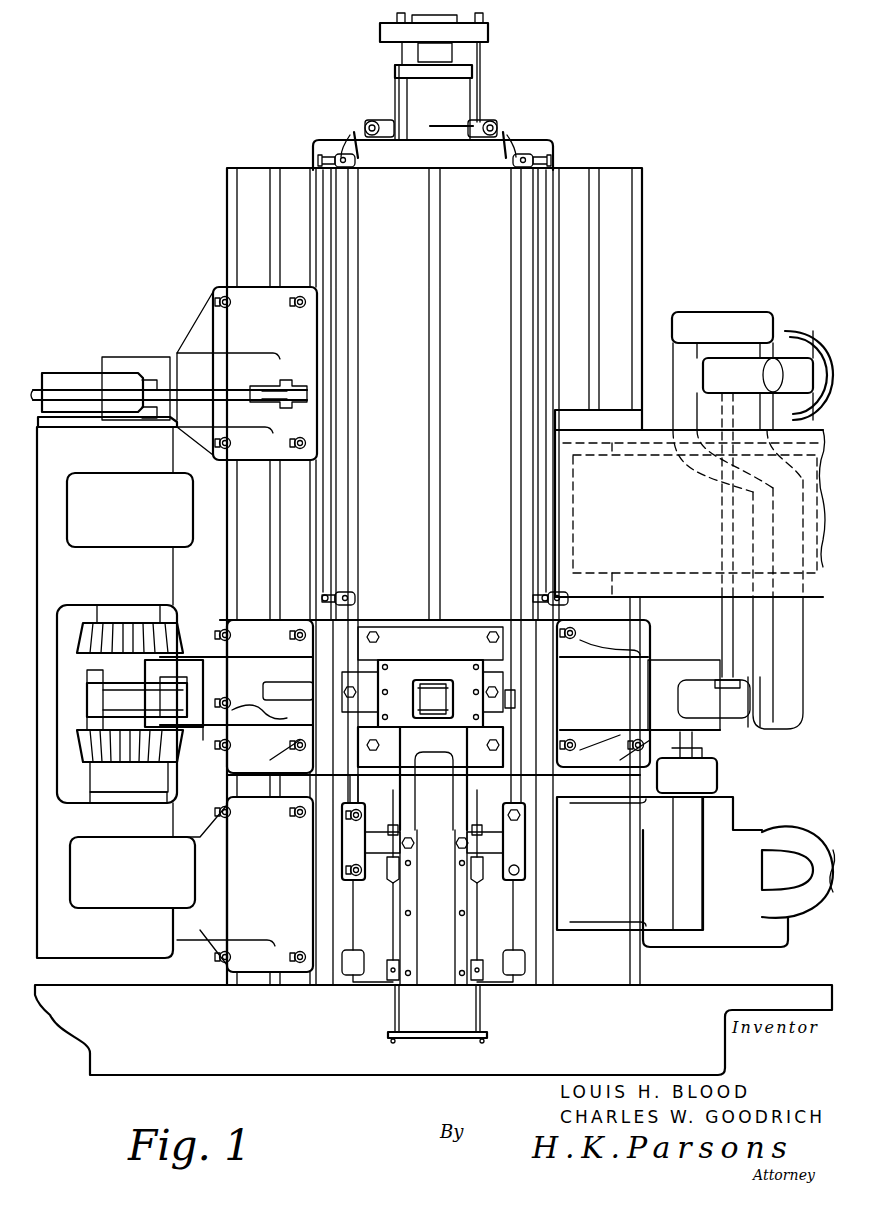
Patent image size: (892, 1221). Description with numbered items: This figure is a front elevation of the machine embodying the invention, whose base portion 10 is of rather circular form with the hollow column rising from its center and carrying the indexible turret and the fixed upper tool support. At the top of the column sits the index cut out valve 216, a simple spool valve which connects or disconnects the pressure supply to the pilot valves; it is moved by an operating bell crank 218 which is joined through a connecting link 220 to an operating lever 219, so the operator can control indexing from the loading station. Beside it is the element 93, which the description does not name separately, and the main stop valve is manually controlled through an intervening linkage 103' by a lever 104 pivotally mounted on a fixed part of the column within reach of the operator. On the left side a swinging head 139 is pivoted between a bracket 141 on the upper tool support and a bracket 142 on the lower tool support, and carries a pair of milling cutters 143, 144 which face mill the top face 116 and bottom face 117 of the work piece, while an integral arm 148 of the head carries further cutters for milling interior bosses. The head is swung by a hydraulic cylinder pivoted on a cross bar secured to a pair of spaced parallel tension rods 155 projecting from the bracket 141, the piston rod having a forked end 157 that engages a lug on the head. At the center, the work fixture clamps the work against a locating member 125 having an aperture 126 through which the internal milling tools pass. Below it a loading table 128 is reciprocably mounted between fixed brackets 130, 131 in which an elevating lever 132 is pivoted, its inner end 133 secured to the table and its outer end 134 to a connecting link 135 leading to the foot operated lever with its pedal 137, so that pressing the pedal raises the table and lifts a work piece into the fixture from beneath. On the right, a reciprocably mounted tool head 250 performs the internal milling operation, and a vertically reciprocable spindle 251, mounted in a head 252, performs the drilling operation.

The base portion 10 is at (386, 1076).
The roller 93 is at (489, 127).
The intervening linkage 103' is at (562, 149).
The lever 104 is at (569, 598).
The top face 116 is at (200, 660).
The bottom face 117 is at (193, 732).
The locating member 125 is at (395, 665).
The aperture 126 is at (433, 690).
The loading table 128 is at (462, 748).
The fixed bracket 130 is at (364, 882).
The fixed bracket 131 is at (506, 870).
The elevating lever 132 is at (400, 826).
The inner end 133 is at (487, 787).
The outer end 134 is at (470, 872).
The connecting link 135 is at (395, 938).
The pedal 137 is at (388, 1035).
The swinging head 139 is at (160, 577).
The bracket 141 is at (190, 412).
The bracket 142 is at (198, 935).
The milling cutter 143 is at (80, 628).
The milling cutter 144 is at (85, 765).
The integral arm 148 is at (135, 670).
The tension rods 155 is at (196, 345).
The forked end 157 is at (150, 385).
The index cut out valve 216 is at (380, 122).
The operating bell crank 218 is at (348, 148).
The operating lever 219 is at (324, 598).
The connecting link 220 is at (323, 498).
The tool head 250 is at (791, 728).
The spindle 251 is at (718, 781).
The head 252 is at (735, 852).